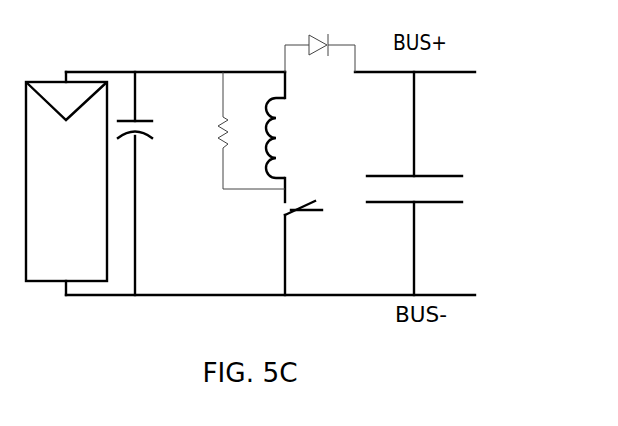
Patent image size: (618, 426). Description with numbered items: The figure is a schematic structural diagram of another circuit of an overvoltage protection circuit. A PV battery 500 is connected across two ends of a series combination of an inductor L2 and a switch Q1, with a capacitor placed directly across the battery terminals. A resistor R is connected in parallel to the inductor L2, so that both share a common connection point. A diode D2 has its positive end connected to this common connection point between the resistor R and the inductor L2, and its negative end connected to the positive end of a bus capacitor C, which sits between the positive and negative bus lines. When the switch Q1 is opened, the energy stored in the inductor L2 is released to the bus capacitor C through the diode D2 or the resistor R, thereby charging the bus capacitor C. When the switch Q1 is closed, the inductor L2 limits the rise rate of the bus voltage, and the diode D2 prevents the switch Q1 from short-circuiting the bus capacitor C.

The PV battery 500 is at (50, 214).
The inductor L2 is at (293, 138).
The switch Q1 is at (284, 248).
The resistor R is at (238, 130).
The diode D2 is at (320, 40).
The bus capacitor C is at (417, 183).